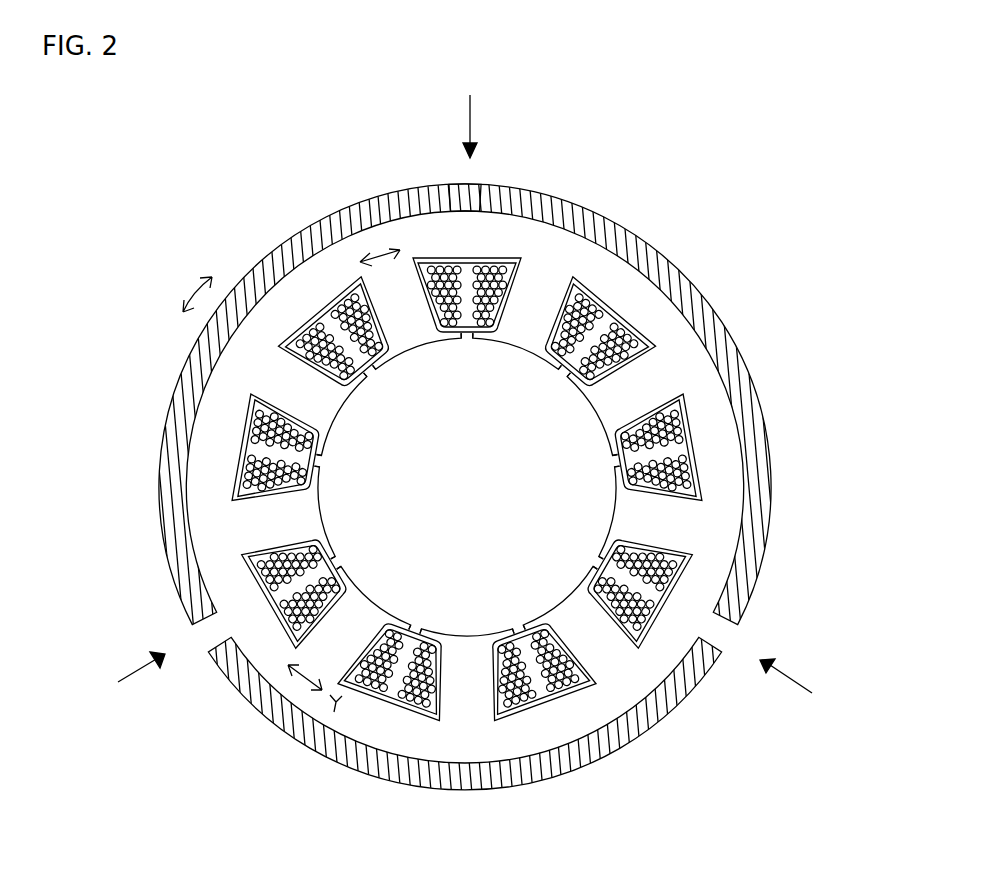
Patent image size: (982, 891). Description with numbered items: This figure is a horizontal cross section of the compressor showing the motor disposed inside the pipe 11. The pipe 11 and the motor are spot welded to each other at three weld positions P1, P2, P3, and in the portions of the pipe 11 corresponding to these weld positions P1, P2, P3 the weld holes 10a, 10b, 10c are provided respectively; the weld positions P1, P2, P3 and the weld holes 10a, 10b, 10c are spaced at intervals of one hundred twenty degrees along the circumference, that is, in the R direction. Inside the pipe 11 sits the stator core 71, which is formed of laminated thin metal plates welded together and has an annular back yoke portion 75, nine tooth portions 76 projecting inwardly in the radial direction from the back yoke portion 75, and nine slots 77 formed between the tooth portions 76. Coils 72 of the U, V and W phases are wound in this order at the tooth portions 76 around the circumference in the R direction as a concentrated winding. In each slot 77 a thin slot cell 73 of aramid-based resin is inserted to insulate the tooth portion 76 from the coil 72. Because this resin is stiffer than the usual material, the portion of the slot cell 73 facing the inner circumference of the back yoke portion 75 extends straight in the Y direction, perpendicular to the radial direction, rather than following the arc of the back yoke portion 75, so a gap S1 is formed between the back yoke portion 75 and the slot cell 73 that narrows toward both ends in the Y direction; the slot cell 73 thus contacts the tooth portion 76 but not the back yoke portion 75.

The pipe 11 is at (358, 206).
The back yoke portion 75 is at (464, 470).
The weld hole 10a is at (482, 200).
The weld hole 10b is at (205, 632).
The weld hole 10c is at (714, 652).
The core 71 is at (469, 479).
The coil 72 is at (500, 270).
The slot cell 73 is at (371, 374).
The tooth portion 76 is at (314, 404).
The slot 77 is at (466, 265).
The gap S1 is at (477, 258).
The weld position P1 is at (470, 111).
The weld position P2 is at (124, 678).
The weld position P3 is at (803, 687).
The R direction R is at (190, 286).
The Y-direction Y is at (344, 480).